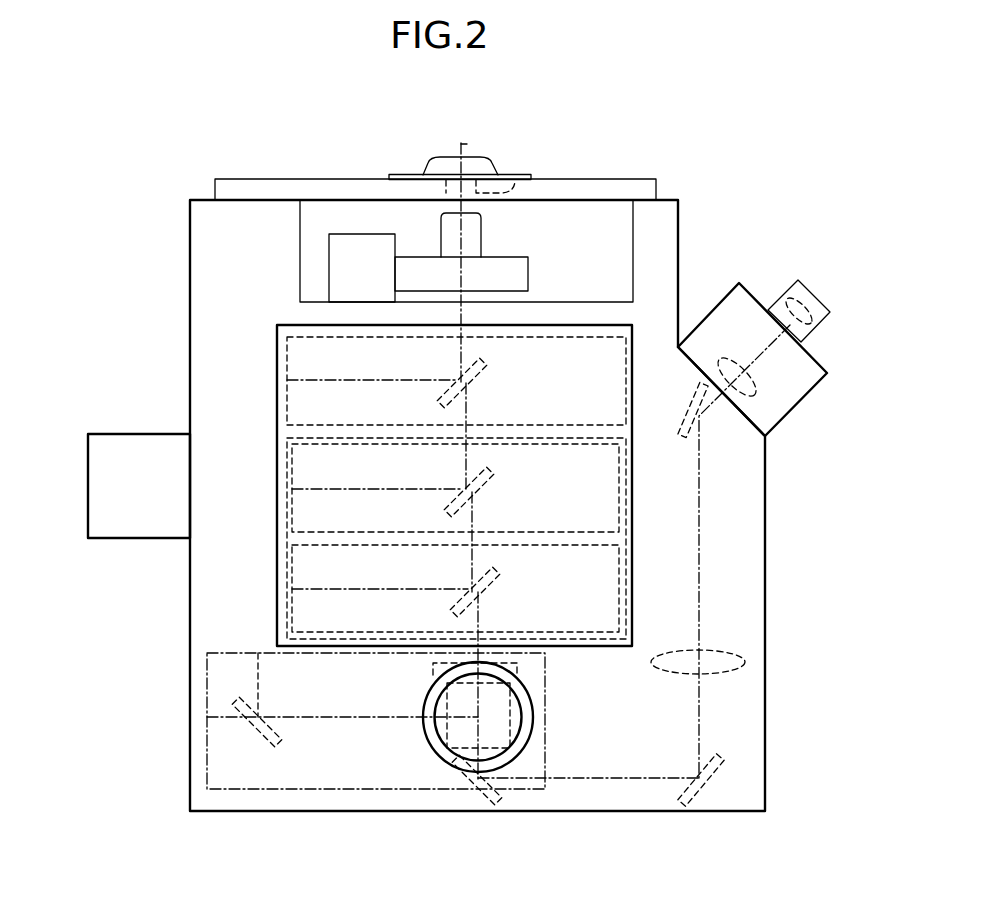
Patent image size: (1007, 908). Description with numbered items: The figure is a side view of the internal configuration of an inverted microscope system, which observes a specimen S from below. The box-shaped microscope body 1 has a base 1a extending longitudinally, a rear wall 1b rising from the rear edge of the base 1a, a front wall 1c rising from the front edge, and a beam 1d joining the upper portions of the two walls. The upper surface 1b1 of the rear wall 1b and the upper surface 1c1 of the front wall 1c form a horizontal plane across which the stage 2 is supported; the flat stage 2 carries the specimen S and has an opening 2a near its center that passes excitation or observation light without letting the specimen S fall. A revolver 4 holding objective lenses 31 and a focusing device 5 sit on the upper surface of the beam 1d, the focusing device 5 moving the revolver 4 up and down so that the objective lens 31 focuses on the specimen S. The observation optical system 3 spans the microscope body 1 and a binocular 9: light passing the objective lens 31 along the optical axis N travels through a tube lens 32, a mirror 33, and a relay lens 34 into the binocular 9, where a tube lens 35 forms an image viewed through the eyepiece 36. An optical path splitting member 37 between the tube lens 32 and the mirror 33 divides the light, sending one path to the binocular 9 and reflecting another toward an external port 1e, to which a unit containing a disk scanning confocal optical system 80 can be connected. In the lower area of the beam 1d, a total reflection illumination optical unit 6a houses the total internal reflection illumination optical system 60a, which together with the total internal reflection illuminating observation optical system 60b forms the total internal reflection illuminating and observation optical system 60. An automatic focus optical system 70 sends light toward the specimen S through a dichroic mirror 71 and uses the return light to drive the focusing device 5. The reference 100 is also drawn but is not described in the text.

The microscope body 1 is at (781, 503).
The base 1a is at (750, 787).
The rear wall 1b is at (205, 252).
The upper surface of the rear wall 1b1 is at (200, 199).
The front wall 1c is at (679, 218).
The upper surface of the front wall 1c1 is at (679, 200).
The beam 1d is at (558, 310).
The external port 1e is at (530, 717).
The stage 2 is at (600, 179).
The opening 2a is at (515, 175).
The observation optical system 3 is at (782, 622).
The revolver 4 is at (515, 273).
The focusing device 5 is at (350, 234).
The total reflection illumination optical unit 6a is at (105, 492).
The binocular 9 is at (806, 397).
The objective lens 31 is at (473, 236).
The tube lens 32 is at (440, 663).
The mirror 33 is at (700, 432).
The relay lens 34 is at (745, 658).
The tube lens 35 is at (753, 398).
The eyepiece 36 is at (795, 300).
The optical path splitting member 37 is at (517, 732).
The total internal reflection illuminating and observation optical system 60 is at (277, 558).
The total internal reflection illumination optical system 60a is at (277, 455).
The total internal reflection illuminating observation optical system 60b is at (277, 600).
The automatic focus optical system 70 is at (277, 365).
The dichroic mirror 71 is at (480, 375).
The disk scanning confocal optical system 80 is at (323, 790).
The substrate 100 is at (405, 173).
The specimen S is at (438, 167).
The optical axis N is at (463, 145).